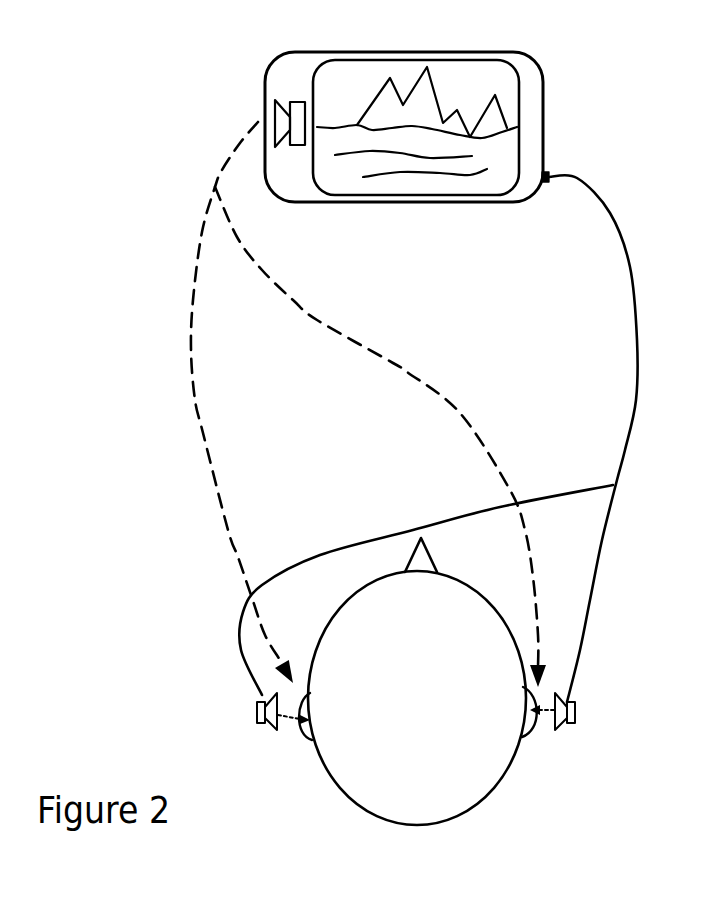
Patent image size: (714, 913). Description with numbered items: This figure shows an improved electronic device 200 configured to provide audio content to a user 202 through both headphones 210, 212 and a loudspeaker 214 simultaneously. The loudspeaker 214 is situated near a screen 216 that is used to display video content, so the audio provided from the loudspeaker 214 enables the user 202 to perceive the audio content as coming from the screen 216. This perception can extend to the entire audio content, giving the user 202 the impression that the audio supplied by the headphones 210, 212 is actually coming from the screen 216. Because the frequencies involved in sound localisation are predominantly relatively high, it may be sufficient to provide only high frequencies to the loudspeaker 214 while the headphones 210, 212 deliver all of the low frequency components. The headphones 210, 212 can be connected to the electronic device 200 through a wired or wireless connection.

The electronic device 200 is at (244, 71).
The user 202 is at (418, 805).
The headphone 210 is at (257, 717).
The headphone 212 is at (576, 712).
The loudspeaker 214 is at (272, 123).
The screen 216 is at (453, 124).